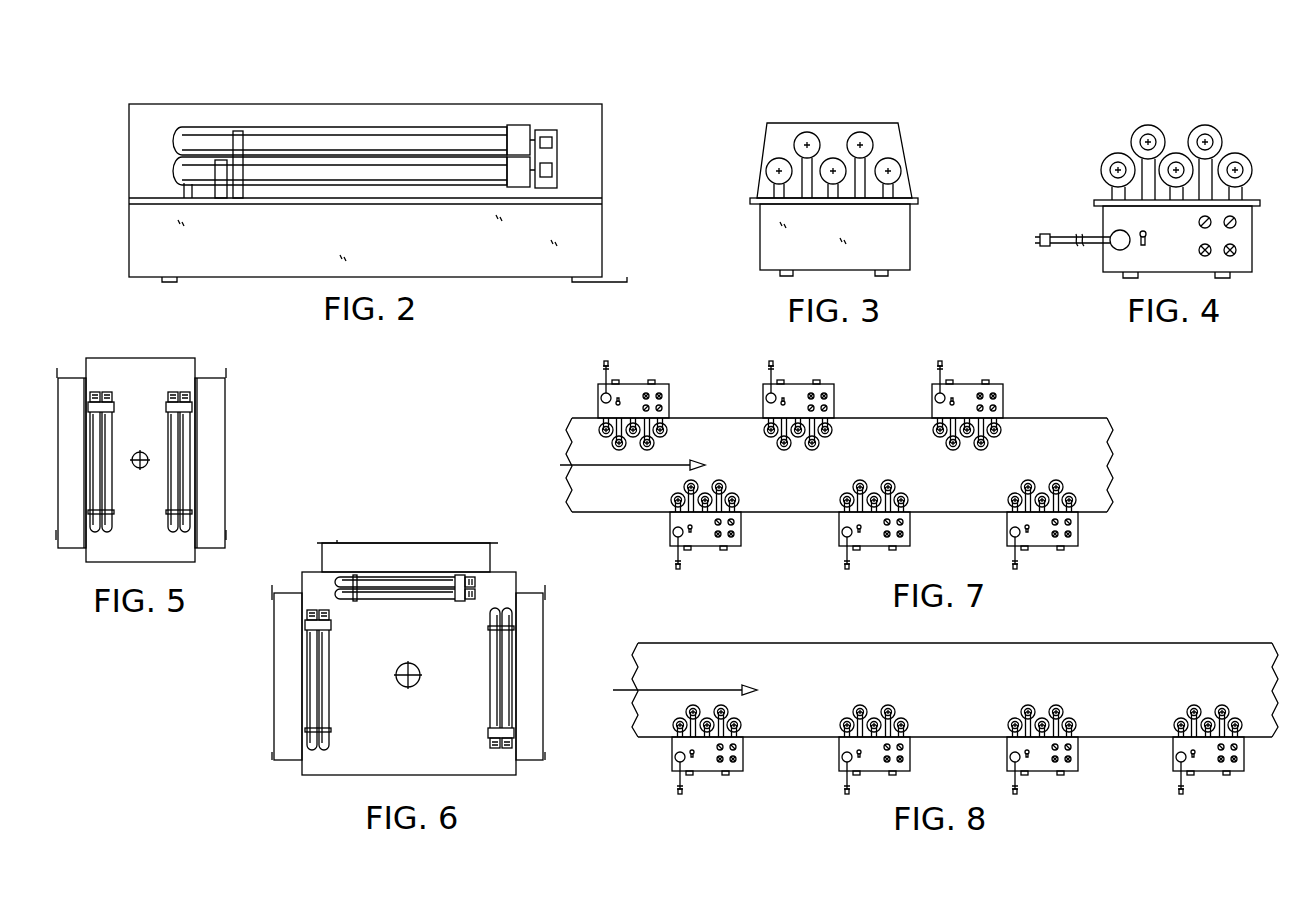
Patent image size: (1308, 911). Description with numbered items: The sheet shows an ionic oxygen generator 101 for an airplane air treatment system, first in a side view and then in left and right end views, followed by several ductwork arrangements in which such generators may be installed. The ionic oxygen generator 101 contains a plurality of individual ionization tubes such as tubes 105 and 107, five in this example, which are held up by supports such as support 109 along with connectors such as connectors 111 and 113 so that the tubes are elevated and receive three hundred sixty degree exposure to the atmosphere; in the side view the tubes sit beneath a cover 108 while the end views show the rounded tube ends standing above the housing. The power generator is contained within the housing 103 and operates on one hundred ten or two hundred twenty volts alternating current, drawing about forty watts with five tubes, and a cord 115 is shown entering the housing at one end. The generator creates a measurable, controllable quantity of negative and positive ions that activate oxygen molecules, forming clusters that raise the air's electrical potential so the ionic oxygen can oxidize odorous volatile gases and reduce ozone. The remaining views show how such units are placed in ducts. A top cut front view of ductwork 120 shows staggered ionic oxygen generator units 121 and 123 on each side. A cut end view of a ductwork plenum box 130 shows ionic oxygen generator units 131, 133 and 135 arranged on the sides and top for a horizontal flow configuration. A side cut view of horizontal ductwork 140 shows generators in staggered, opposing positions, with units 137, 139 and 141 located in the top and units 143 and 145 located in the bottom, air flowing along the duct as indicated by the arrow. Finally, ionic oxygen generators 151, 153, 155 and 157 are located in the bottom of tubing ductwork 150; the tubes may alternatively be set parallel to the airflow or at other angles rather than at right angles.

In FIG. 2, the ionic oxygen generator 101 is at (146, 252).
In FIG. 3, the ionic oxygen generator 101 is at (886, 250).
In FIG. 4, the ionic oxygen generator 101 is at (1250, 238).
In FIG. 2, the housing 103 is at (455, 258).
In FIG. 3, the housing 103 is at (768, 231).
In FIG. 4, the housing 103 is at (1106, 262).
In FIG. 2, the ionization tube 105 is at (193, 186).
In FIG. 3, the ionization tube 105 is at (902, 163).
In FIG. 4, the ionization tube 105 is at (1114, 158).
In FIG. 2, the ionization tube 107 is at (314, 136).
In FIG. 3, the ionization tube 107 is at (866, 132).
In FIG. 4, the ionization tube 107 is at (1140, 130).
In FIG. 2, the reflector hood 108 is at (377, 101).
In FIG. 3, the reflector hood 108 is at (812, 115).
In FIG. 2, the support 109 is at (222, 200).
In FIG. 3, the support 109 is at (890, 194).
In FIG. 2, the connector 111 is at (559, 170).
In FIG. 2, the connector 113 is at (548, 131).
In FIG. 4, the power cord 115 is at (1093, 232).
In FIG. 5, the ductwork 120 is at (176, 357).
In FIG. 5, the ionic oxygen generator unit 121 is at (73, 386).
In FIG. 5, the ionic oxygen generator unit 123 is at (218, 417).
In FIG. 6, the ductwork plenum box 130 is at (519, 580).
In FIG. 6, the ionic oxygen generator unit 131 is at (539, 712).
In FIG. 6, the ionic oxygen generator unit 133 is at (391, 550).
In FIG. 6, the ionic oxygen generator unit 135 is at (279, 693).
In FIG. 7, the ionic oxygen generator unit 137 is at (964, 387).
In FIG. 7, the ionic oxygen generator unit 139 is at (834, 400).
In FIG. 7, the horizontal ductwork 140 is at (1058, 418).
In FIG. 7, the ionic oxygen generator unit 141 is at (669, 398).
In FIG. 7, the ionic oxygen generator unit 143 is at (709, 548).
In FIG. 7, the ionic oxygen generator unit 145 is at (835, 520).
In FIG. 8, the tubing ductwork 150 is at (1185, 643).
In FIG. 8, the ionic oxygen generator 151 is at (745, 762).
In FIG. 8, the ionic oxygen generator 153 is at (912, 762).
In FIG. 8, the ionic oxygen generator 155 is at (1079, 760).
In FIG. 8, the ionic oxygen generator 157 is at (1245, 760).